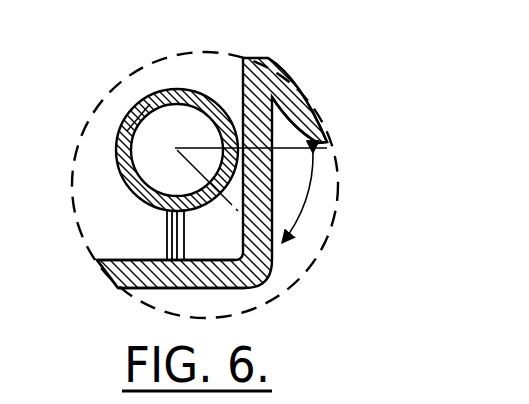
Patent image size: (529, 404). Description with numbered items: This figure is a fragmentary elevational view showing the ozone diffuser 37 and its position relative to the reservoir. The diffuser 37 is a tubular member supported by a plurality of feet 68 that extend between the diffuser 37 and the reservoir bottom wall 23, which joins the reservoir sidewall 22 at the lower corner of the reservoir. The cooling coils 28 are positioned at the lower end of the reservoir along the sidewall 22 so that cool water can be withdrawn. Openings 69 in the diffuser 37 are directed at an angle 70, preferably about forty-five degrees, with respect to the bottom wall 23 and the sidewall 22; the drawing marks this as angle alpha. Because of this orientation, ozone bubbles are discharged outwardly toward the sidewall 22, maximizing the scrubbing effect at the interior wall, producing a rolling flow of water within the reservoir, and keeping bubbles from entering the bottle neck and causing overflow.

The reservoir sidewall 22 is at (240, 64).
The reservoir bottom wall 23 is at (124, 263).
The cooling coils 28 is at (300, 96).
The diffuser 37 is at (180, 90).
The feet 68 is at (167, 224).
The openings 69 is at (208, 216).
The angle 70 is at (300, 232).
The angle alpha is at (307, 203).